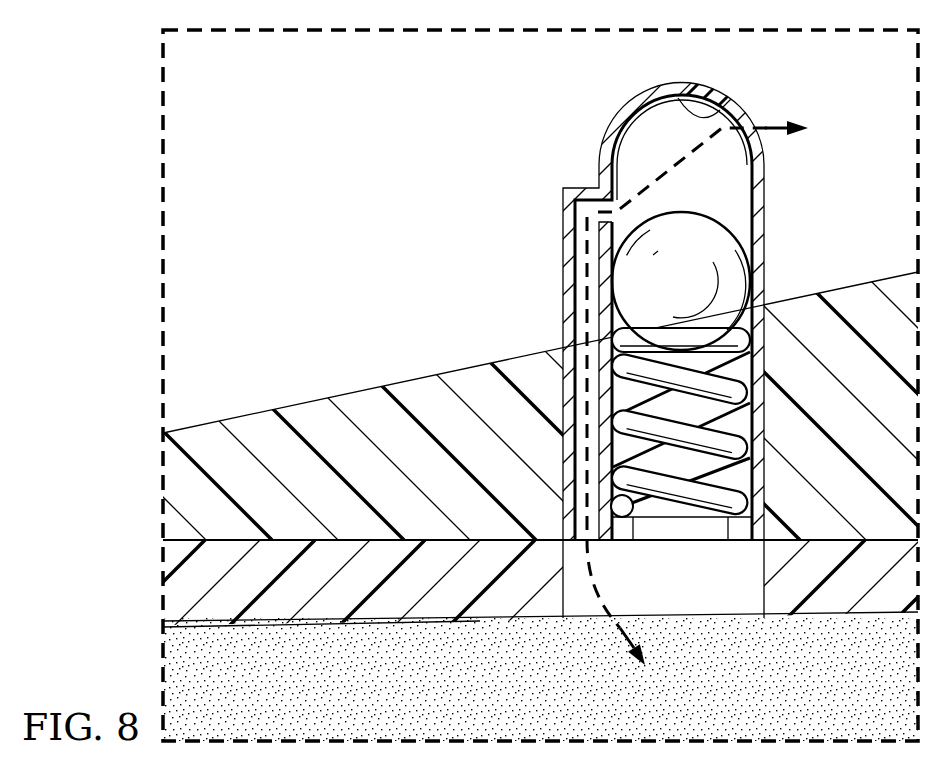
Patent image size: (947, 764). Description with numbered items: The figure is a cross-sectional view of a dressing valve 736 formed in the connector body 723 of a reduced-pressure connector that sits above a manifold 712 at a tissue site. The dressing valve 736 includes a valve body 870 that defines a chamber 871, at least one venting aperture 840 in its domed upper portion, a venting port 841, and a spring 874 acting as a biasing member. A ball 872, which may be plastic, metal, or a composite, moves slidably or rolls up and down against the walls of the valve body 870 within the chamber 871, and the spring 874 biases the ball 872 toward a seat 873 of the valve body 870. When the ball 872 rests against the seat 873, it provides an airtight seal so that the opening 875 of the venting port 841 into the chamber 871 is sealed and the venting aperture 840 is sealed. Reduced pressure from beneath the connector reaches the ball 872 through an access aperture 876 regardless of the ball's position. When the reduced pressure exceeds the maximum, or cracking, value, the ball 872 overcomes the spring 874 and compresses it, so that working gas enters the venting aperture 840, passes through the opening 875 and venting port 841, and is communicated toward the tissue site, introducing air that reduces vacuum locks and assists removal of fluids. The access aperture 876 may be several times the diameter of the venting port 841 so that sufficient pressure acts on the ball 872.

The manifold 712 is at (437, 693).
The connector body 723 is at (360, 390).
The dressing valve 736 is at (552, 209).
The venting aperture 840 is at (546, 327).
The venting port 841 is at (593, 533).
The valve body 870 is at (563, 307).
The chamber 871 is at (655, 125).
The ball 872 is at (700, 210).
The seat 873 is at (713, 100).
The spring 874 is at (745, 482).
The opening 875 is at (617, 203).
The access aperture 876 is at (728, 520).